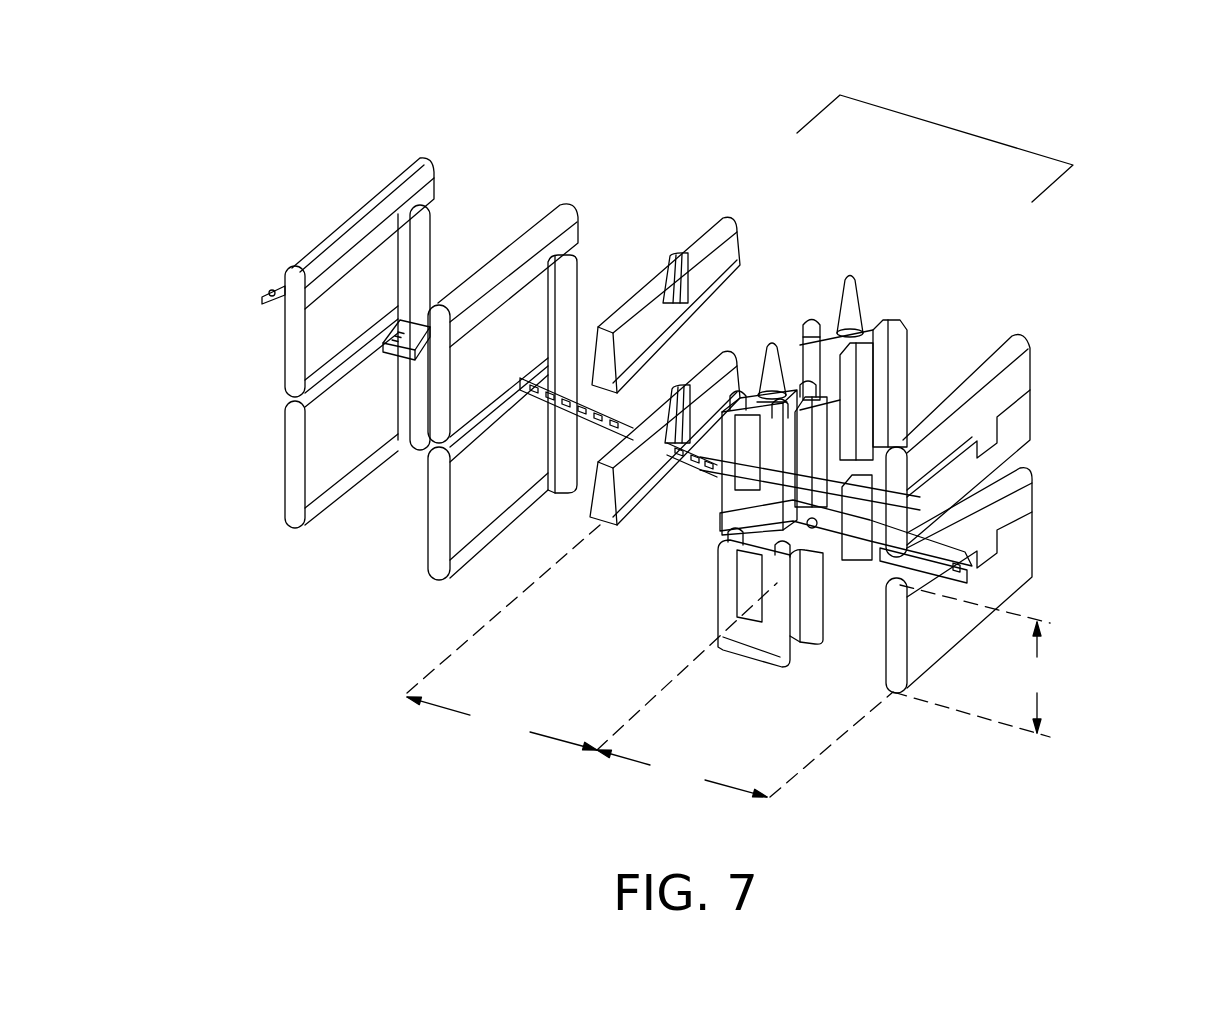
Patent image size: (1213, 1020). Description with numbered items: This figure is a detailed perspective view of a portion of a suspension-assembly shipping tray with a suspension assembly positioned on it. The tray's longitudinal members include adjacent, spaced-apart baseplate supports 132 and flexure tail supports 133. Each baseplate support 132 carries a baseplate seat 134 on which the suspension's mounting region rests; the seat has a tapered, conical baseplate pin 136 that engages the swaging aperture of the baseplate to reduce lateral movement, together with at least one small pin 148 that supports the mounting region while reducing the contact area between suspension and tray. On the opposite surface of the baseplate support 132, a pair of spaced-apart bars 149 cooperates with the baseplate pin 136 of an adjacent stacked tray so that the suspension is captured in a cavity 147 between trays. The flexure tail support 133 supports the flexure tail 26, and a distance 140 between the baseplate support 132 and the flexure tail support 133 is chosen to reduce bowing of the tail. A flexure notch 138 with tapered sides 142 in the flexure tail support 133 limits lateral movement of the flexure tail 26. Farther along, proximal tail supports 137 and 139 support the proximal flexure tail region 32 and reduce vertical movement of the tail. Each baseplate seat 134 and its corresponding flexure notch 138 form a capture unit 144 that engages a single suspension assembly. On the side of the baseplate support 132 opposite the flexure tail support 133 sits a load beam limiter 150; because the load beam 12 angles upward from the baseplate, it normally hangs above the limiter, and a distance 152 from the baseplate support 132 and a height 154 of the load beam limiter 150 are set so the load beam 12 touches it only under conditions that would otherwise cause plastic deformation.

The load beam 12 is at (966, 565).
The flexure tail 26 is at (766, 343).
The proximal flexure tail region 32 is at (417, 337).
The baseplate support 132 is at (710, 518).
The flexure tail support 133 is at (742, 230).
The baseplate seat 134 is at (877, 313).
The baseplate pin 136 is at (852, 272).
The proximal tail support 137 is at (562, 205).
The flexure notch 138 is at (680, 462).
The proximal tail support 139 is at (284, 345).
The distance 140 is at (502, 723).
The tapered sides 142 is at (666, 392).
The capture unit 144 is at (957, 127).
The cavity 147 is at (1017, 463).
The small pin 148 is at (890, 315).
The bars 149 is at (724, 522).
The load beam limiter 150 is at (1028, 370).
The distance 152 is at (682, 773).
The height 154 is at (1036, 677).